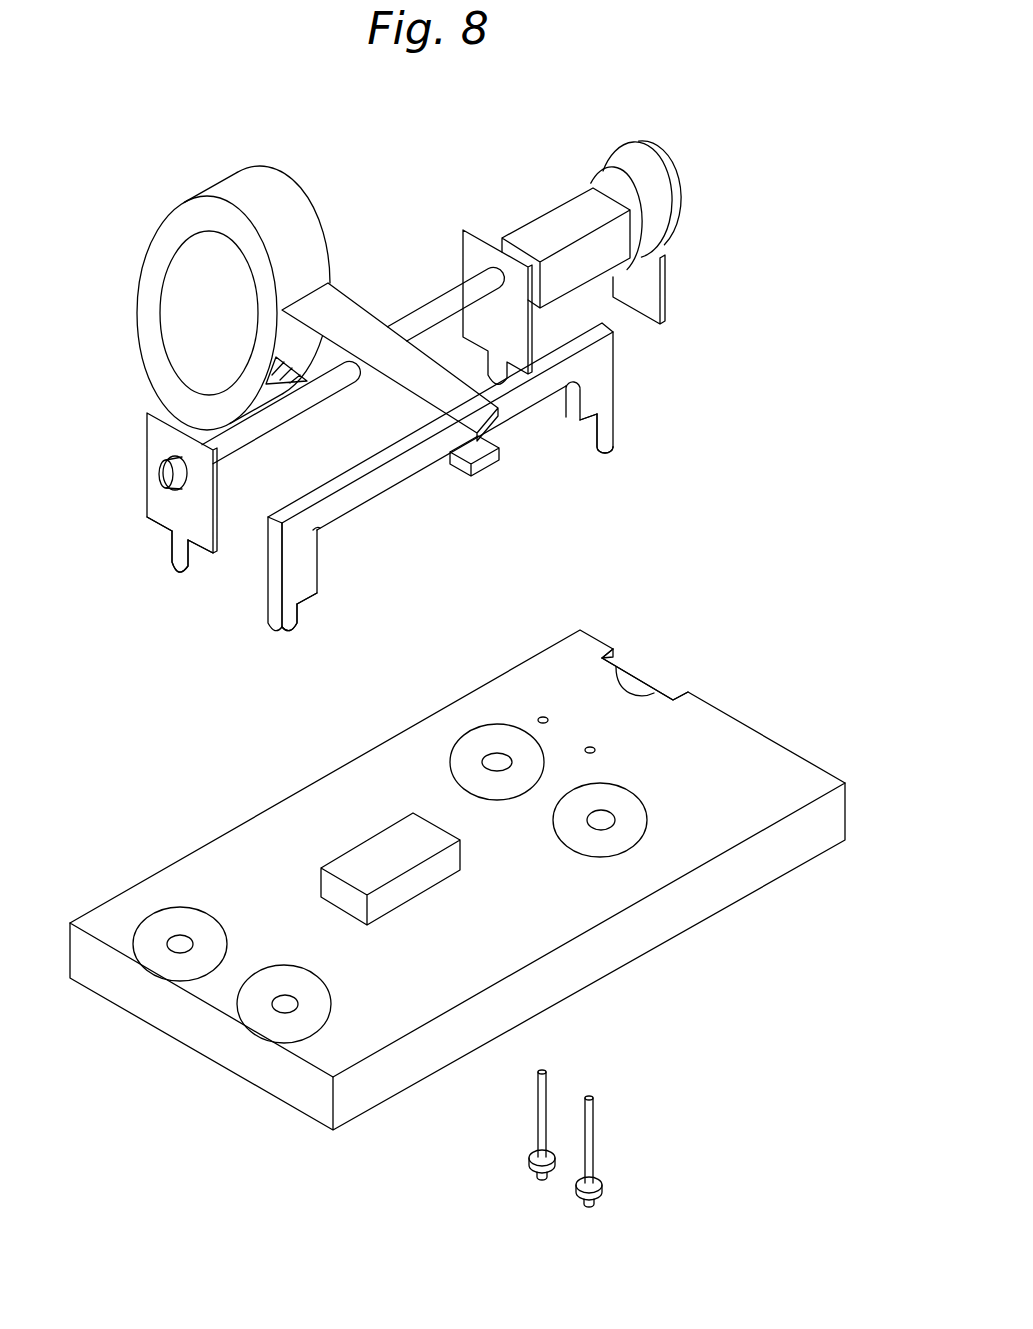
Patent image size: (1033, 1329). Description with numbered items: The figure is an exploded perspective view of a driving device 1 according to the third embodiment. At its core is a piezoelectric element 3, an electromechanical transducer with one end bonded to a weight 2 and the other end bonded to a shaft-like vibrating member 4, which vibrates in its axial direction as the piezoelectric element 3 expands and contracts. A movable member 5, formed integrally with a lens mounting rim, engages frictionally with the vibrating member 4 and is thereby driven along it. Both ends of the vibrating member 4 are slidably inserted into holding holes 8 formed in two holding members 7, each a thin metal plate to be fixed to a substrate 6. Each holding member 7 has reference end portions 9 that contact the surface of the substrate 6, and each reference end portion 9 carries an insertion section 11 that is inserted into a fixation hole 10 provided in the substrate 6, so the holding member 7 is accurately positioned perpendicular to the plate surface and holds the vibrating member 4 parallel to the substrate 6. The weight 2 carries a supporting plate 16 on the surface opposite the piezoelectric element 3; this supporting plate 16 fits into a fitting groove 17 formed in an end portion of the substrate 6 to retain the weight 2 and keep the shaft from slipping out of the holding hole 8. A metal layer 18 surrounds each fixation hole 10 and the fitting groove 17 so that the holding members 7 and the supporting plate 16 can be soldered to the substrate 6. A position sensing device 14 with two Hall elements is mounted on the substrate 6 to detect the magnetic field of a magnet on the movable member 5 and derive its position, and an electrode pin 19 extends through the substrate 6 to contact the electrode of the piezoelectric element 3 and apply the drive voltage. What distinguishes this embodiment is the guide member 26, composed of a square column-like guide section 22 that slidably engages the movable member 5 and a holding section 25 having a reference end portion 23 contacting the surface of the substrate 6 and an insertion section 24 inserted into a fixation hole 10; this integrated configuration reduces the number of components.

The driving device 1 is at (383, 172).
The weight 2 is at (630, 163).
The piezoelectric element 3 is at (550, 235).
The vibrating member 4 is at (437, 317).
The movable member 5 is at (345, 333).
The substrate 6 is at (751, 758).
The holding member 7 is at (488, 244).
The holding hole 8 is at (160, 475).
The reference end portion 9 is at (165, 530).
The fixation hole 10 is at (173, 933).
The insertion section 11 is at (172, 562).
The position sensing device 14 is at (382, 847).
The supporting plate 16 is at (668, 300).
The fitting groove 17 is at (674, 698).
The metal layer 18 is at (143, 933).
The electrode pin 19 is at (538, 1130).
The guide section 22 is at (376, 487).
The reference end portion 23 is at (580, 422).
The insertion section 24 is at (612, 430).
The holding section 25 is at (598, 386).
The guide member 26 is at (430, 480).